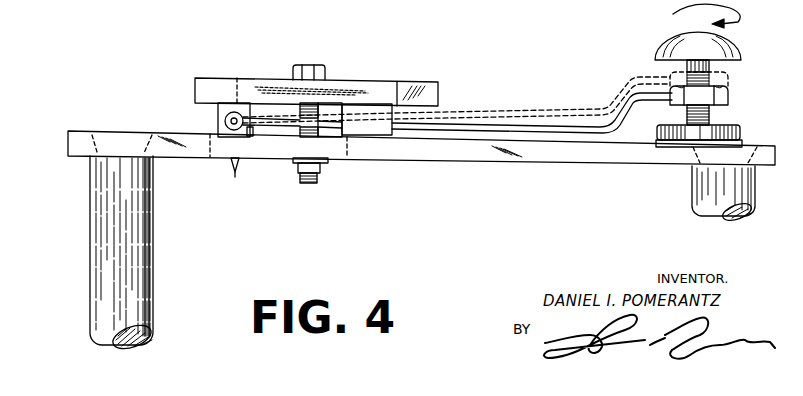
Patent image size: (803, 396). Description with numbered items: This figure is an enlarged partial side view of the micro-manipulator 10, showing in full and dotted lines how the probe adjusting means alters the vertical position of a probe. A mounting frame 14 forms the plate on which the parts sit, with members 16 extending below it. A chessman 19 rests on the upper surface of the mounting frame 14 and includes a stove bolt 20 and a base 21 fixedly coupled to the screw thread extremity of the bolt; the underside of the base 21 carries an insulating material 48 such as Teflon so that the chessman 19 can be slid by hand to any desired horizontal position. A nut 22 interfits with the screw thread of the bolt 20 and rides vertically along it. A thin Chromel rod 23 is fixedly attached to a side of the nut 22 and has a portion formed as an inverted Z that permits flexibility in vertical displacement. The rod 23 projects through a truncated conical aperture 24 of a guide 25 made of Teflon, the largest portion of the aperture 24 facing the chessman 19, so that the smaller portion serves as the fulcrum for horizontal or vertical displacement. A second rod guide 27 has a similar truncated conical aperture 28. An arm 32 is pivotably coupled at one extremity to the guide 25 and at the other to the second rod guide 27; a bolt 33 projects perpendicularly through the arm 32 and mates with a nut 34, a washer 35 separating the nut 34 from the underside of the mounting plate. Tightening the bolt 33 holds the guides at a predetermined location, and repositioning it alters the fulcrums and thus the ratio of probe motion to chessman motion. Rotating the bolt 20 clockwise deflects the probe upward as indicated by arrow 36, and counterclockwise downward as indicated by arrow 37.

The bracket assembly 10 is at (463, 192).
The base plate 14 is at (128, 142).
The legs 16 is at (97, 323).
The chessman 19 is at (700, 35).
The stove bolt 20 is at (710, 115).
The base 21 is at (657, 131).
The nut 22 is at (722, 92).
The rod 23 is at (490, 122).
The truncated conical aperture 24 is at (355, 138).
The guide 25 is at (346, 137).
The second rod guide 27 is at (225, 130).
The truncated conical aperture 28 is at (230, 115).
The arm 32 is at (258, 82).
The bolt 33 is at (309, 65).
The nut 34 is at (324, 168).
The washer 35 is at (296, 163).
The arrow 36 is at (235, 181).
The arrow 37 is at (251, 136).
The insulating material 48 is at (745, 145).